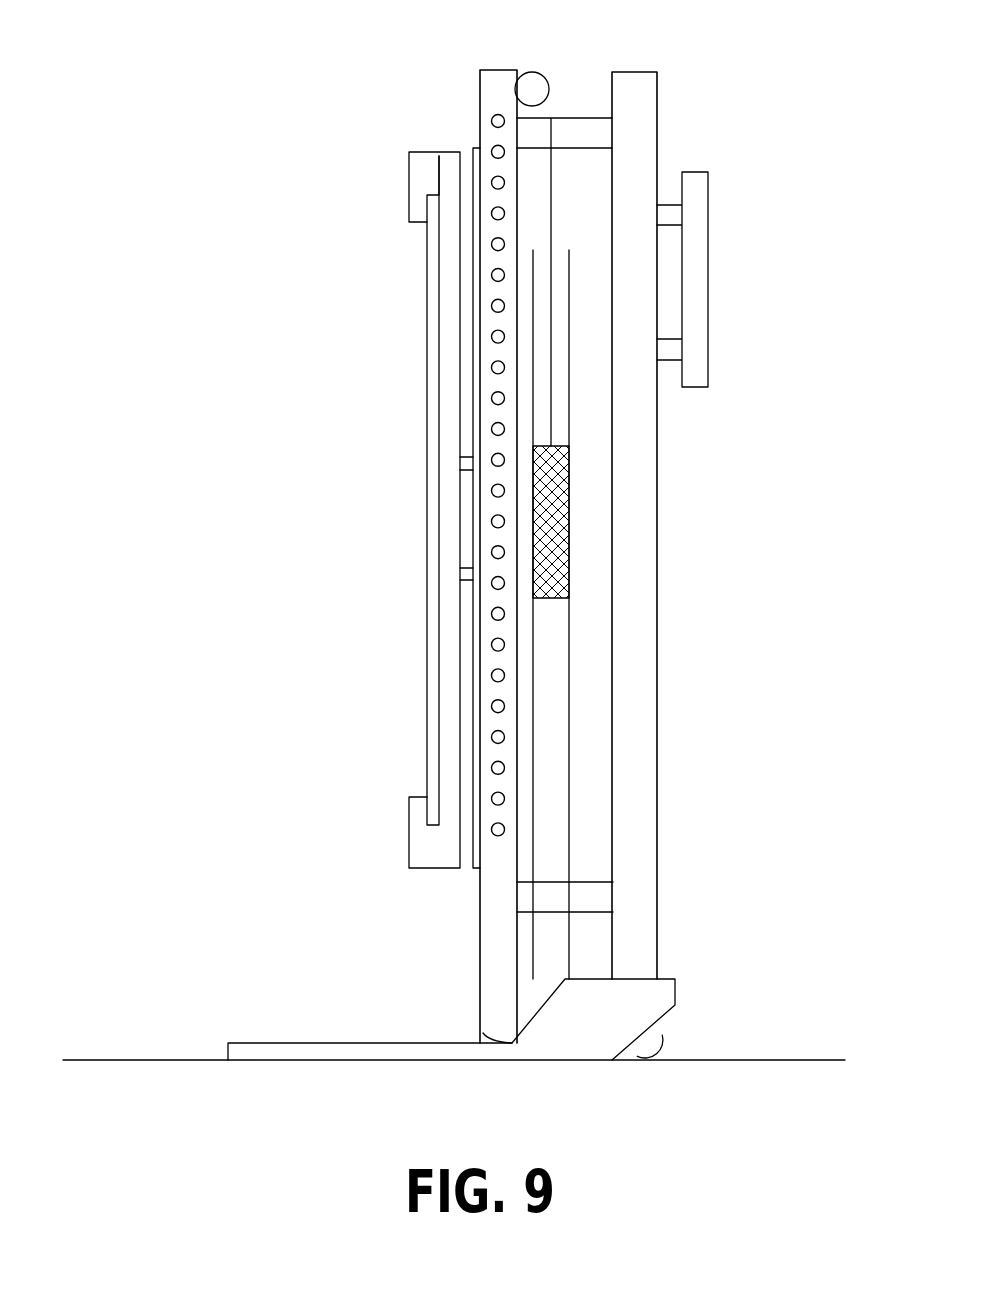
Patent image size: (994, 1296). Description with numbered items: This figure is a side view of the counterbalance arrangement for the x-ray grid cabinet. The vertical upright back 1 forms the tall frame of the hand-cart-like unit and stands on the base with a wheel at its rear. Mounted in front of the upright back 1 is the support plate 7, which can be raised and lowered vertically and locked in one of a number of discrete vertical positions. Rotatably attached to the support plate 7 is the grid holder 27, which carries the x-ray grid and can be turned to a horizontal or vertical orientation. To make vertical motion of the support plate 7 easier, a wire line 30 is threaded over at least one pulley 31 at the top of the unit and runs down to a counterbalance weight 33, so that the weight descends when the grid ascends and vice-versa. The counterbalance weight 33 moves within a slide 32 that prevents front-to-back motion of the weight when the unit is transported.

The vertical upright back 1 is at (635, 542).
The support plate 7 is at (472, 602).
The grid holder 27 is at (447, 373).
The wire line 30 is at (558, 193).
The pulley 31 is at (548, 72).
The slide 32 is at (575, 365).
The counterbalance weight 33 is at (580, 573).